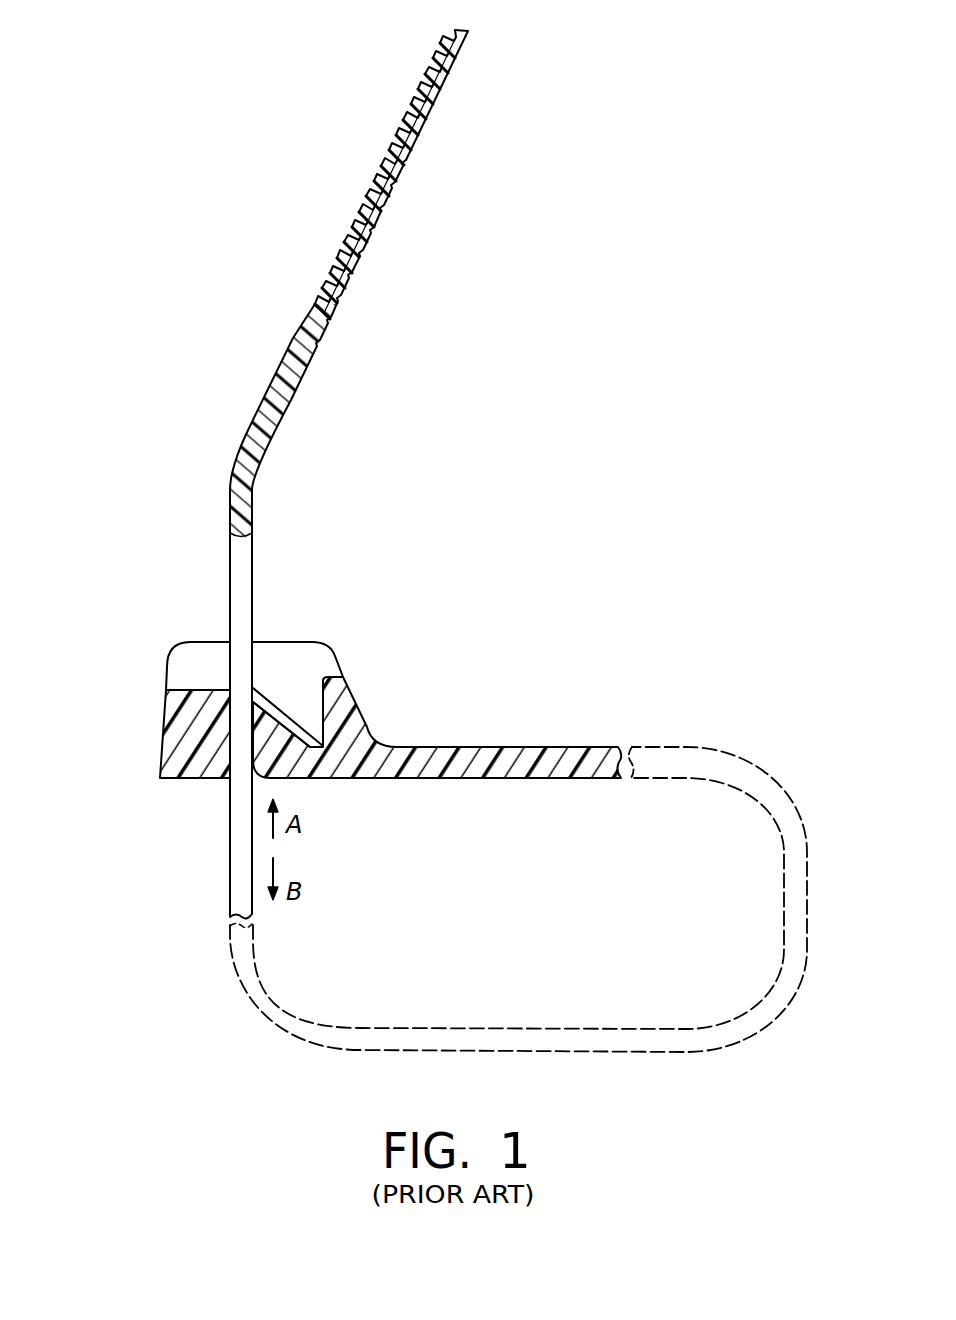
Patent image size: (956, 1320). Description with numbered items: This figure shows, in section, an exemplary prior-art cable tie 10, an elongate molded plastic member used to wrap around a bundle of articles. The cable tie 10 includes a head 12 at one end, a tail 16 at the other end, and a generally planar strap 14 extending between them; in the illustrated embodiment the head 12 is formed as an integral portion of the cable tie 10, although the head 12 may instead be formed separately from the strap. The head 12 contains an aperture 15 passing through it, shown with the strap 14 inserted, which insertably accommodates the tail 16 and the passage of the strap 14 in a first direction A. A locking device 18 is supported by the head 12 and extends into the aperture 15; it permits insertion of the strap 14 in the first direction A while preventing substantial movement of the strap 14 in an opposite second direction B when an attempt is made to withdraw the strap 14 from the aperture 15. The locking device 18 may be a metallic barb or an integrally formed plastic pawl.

The cable tie 10 is at (330, 548).
The head 12 is at (163, 725).
The strap 14 is at (535, 746).
The aperture 15 is at (242, 648).
The tail 16 is at (468, 36).
The locking device 18 is at (275, 703).